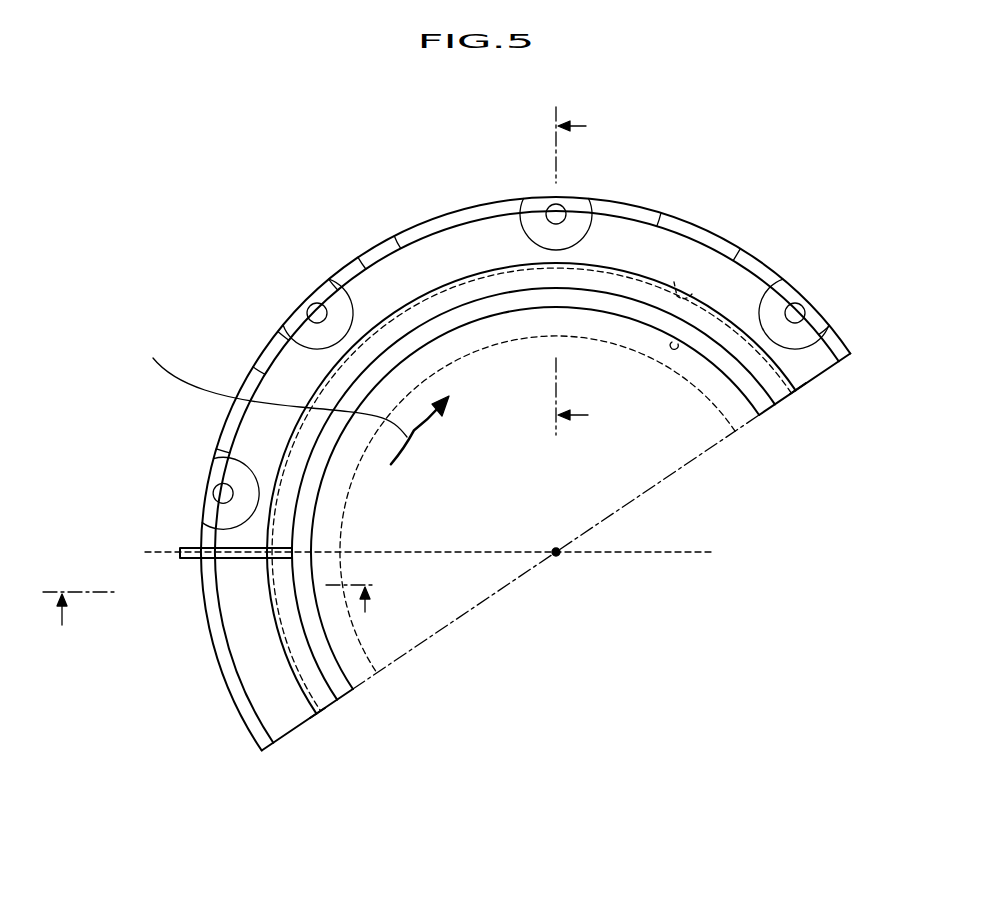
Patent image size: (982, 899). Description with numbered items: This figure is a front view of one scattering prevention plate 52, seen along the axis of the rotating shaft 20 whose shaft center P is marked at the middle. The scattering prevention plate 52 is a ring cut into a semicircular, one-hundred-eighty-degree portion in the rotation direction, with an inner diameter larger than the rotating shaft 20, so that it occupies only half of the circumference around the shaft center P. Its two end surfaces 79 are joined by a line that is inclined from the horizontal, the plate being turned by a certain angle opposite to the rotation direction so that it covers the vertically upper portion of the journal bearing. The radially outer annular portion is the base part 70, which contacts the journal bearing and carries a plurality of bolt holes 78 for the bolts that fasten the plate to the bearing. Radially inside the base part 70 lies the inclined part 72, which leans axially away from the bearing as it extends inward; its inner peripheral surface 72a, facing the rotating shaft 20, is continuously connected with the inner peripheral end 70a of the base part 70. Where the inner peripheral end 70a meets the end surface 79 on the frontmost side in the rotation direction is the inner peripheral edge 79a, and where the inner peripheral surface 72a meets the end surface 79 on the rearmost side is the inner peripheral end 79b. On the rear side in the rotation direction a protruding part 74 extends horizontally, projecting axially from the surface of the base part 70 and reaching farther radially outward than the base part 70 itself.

The scattering prevention plate 52 is at (325, 198).
The base part 70 is at (490, 240).
The inner peripheral end of the base part 70a is at (674, 282).
The inclined part 72 is at (507, 303).
The inner peripheral surface of the inclined part 72a is at (672, 342).
The protruding part 74 is at (185, 560).
The bolt holes 78 is at (553, 210).
The end surfaces 79 is at (825, 367).
The inner peripheral edge 79a is at (797, 383).
The inner peripheral end 79b is at (320, 713).
The rotating shaft 20 is at (447, 605).
The shaft center P is at (558, 556).